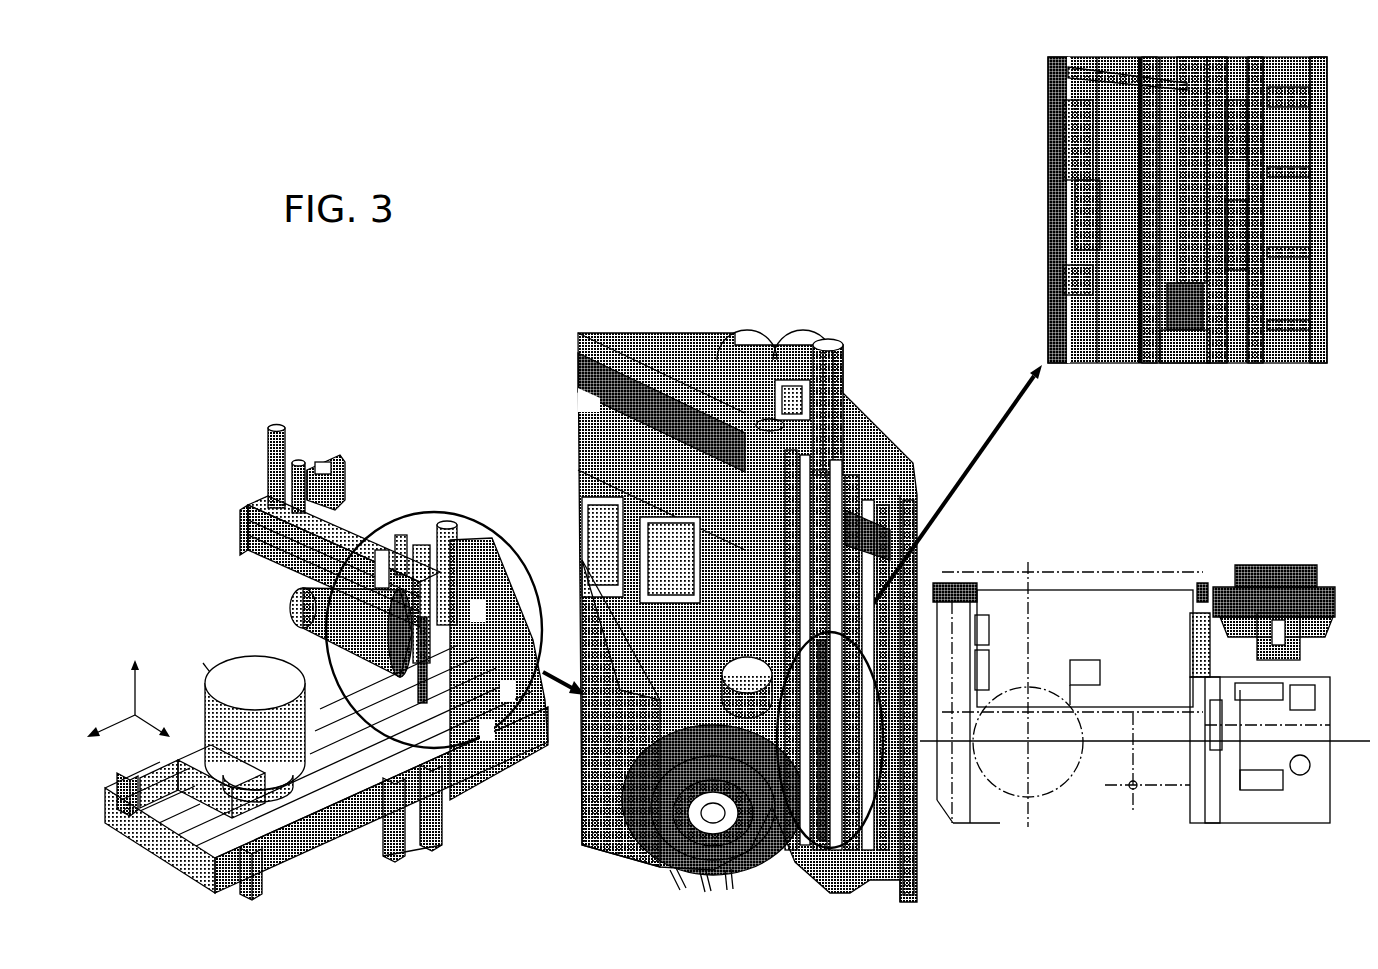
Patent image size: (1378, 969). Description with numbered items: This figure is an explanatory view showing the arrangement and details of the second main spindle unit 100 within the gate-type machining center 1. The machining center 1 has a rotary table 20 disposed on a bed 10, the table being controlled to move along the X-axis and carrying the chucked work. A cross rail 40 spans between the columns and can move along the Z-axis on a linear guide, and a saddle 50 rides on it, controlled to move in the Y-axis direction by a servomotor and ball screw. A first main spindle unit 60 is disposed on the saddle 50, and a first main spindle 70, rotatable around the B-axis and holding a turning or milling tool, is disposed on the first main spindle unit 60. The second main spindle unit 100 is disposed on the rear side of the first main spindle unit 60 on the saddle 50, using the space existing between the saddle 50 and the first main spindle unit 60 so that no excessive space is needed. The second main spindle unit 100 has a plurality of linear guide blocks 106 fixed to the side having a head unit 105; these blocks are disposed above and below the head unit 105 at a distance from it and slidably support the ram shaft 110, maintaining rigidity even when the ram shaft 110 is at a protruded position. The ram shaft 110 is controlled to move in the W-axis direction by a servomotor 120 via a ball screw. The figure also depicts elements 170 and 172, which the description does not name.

The machining center 1 is at (410, 435).
The bed 10 is at (305, 838).
The rotary table 20 is at (205, 778).
The cross rail 40 is at (248, 518).
The saddle 50 is at (273, 488).
The first main spindle unit 60 is at (298, 588).
The first main spindle 70 is at (290, 622).
The second main spindle unit 100 is at (905, 394).
The head unit 105 is at (905, 615).
The linear guide blocks 106 is at (1290, 628).
The ram shaft 110 is at (835, 857).
The servomotor 120 is at (847, 370).
The feed unit 170 is at (880, 517).
The feed rod 172 is at (1186, 115).